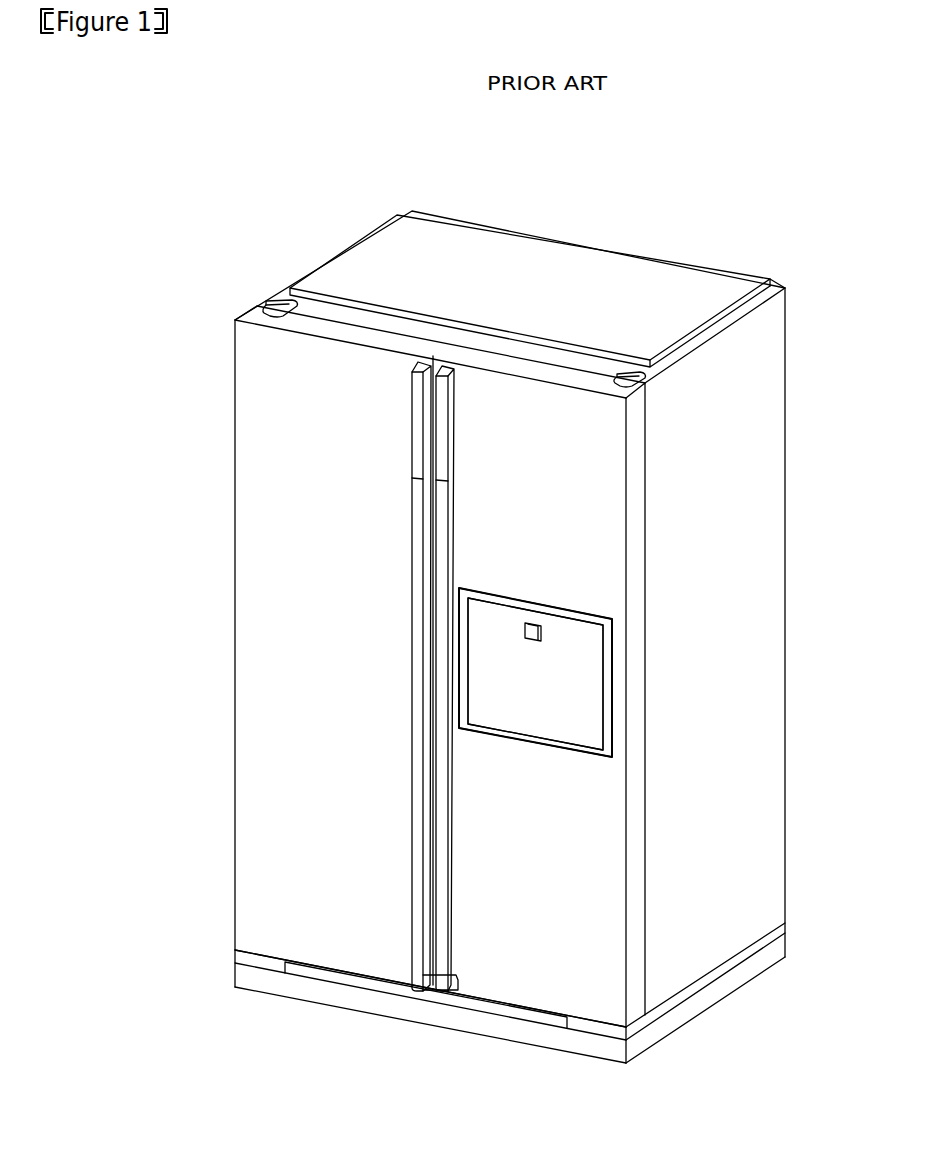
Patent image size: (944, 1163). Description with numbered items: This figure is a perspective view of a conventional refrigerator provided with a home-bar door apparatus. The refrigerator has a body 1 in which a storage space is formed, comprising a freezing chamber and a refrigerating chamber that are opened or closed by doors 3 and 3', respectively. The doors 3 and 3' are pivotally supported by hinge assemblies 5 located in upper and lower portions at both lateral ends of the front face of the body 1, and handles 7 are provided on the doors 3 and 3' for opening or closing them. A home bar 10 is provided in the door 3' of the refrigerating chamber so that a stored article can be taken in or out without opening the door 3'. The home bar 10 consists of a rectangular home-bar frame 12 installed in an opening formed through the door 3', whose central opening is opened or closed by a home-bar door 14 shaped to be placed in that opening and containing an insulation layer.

The body 1 is at (566, 226).
The door 3 is at (296, 647).
The door 3' is at (630, 693).
The hinge assemblies 5 is at (275, 303).
The handles 7 is at (416, 363).
The home bar 10 is at (525, 756).
The home-bar frame 12 is at (607, 642).
The home-bar door 14 is at (570, 685).